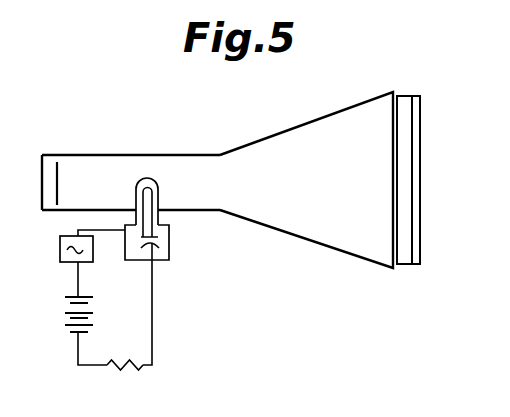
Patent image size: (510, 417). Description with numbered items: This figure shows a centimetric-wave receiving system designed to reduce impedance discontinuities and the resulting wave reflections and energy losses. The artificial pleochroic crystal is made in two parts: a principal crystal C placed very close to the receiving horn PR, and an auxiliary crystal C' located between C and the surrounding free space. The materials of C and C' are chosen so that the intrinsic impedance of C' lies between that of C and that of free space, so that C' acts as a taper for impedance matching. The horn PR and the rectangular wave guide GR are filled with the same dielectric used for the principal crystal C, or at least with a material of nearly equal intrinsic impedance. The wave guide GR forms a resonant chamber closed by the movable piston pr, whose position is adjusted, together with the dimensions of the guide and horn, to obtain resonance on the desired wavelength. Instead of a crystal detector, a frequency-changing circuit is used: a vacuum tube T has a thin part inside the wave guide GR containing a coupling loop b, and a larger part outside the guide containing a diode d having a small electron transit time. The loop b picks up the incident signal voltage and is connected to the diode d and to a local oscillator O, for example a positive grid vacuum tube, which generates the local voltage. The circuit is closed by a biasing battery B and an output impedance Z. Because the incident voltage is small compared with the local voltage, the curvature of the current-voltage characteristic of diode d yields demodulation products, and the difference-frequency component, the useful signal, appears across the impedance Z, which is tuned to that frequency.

The wave guide GR is at (172, 153).
The receiving horn PR is at (315, 243).
The movable piston pr is at (59, 183).
The coupling loop b is at (158, 185).
The vacuum tube T is at (169, 240).
The diode d is at (143, 246).
The local oscillator O is at (60, 249).
The biasing battery B is at (68, 314).
The output impedance Z is at (125, 376).
The principal artificial pleochroic crystal C is at (404, 193).
The auxiliary artificial crystal C' is at (425, 193).